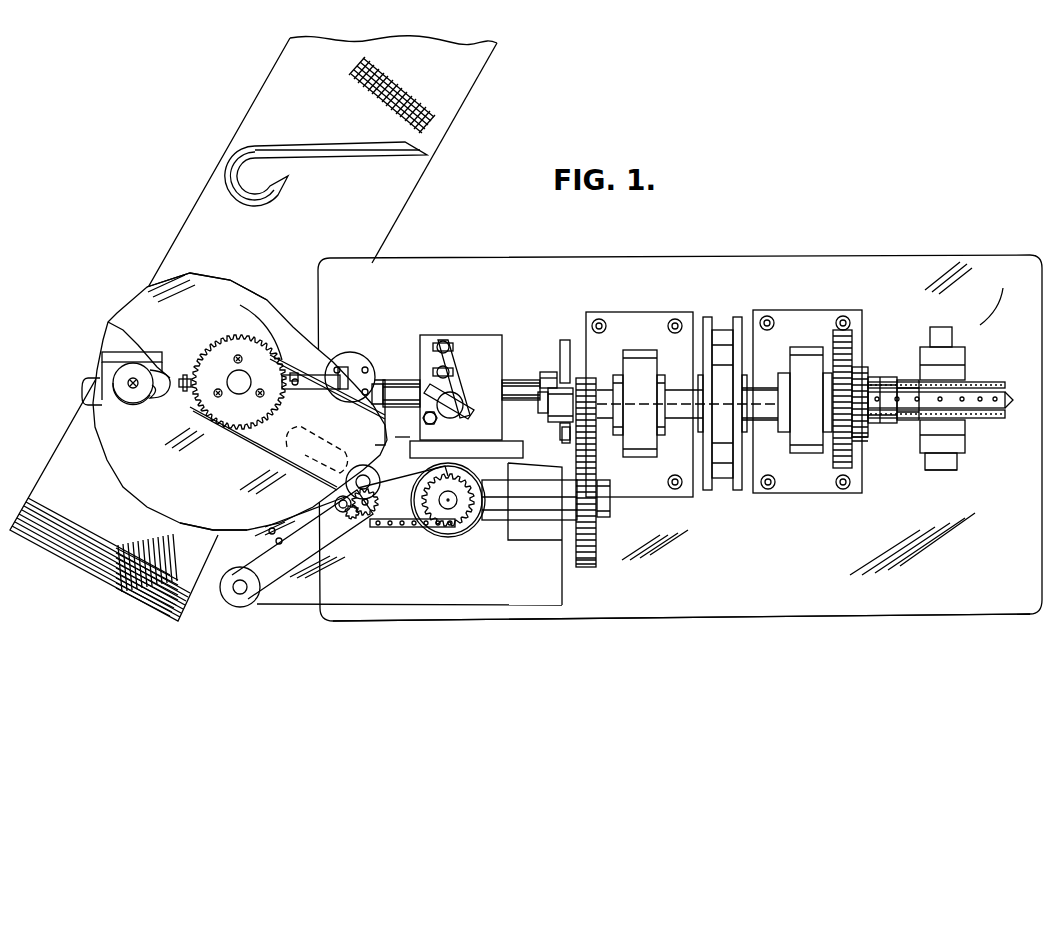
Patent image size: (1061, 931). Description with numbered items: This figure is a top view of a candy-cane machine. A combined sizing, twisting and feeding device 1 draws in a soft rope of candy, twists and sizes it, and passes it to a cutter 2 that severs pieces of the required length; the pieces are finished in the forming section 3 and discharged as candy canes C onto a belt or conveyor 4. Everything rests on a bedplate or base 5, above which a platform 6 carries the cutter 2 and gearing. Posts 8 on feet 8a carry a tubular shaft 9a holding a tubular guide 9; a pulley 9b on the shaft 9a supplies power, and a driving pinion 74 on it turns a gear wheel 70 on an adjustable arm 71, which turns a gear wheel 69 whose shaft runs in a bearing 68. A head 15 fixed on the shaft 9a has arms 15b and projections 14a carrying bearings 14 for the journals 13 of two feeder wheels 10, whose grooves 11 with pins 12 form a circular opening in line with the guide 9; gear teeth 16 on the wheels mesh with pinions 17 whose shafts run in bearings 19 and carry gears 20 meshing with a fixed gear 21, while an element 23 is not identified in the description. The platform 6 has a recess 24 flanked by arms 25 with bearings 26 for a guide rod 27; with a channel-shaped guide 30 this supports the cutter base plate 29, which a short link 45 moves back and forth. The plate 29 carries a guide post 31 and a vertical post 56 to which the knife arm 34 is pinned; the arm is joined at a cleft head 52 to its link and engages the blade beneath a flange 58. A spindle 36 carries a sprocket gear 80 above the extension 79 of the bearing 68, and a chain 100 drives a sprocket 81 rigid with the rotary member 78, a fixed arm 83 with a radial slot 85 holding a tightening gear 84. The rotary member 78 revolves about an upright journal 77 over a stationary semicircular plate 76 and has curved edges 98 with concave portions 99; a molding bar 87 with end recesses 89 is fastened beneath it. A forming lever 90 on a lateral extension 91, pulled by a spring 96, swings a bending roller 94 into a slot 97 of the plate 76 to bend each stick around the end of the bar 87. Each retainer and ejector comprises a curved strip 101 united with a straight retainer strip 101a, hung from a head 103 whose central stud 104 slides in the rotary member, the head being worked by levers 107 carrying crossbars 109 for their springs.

The combined sizing, twisting and feeding device 1 is at (995, 296).
The cutter 2 is at (460, 370).
The forming section 3 is at (139, 328).
The belt or conveyor 4 is at (243, 125).
The bedplate or base 5 is at (803, 606).
The platform 6 is at (450, 612).
The bearing supports or posts 8 is at (810, 452).
The feet 8a is at (627, 340).
The tubular guide 9 is at (575, 448).
The tubular shaft 9a is at (542, 390).
The pulley 9b is at (722, 320).
The rotatable feeder elements 10 is at (1005, 414).
The grooves 11 is at (1005, 398).
The pins or studs 12 is at (975, 410).
The journal 13 is at (947, 471).
The bearings 14 is at (960, 442).
The projections 14a is at (932, 347).
The head 15 is at (833, 403).
The arms 15b is at (886, 445).
The gear teeth 16 is at (985, 384).
The pinions 17 is at (880, 377).
The bearings 19 is at (905, 432).
The gears 20 is at (838, 345).
The fixed gear 21 is at (853, 455).
The pinion gear 23 is at (858, 364).
The recess 24 is at (515, 445).
The arms 25 is at (610, 476).
The bearings 26 is at (550, 372).
The horizontal guide rod 27 is at (510, 380).
The base plate of the cutter 29 is at (476, 355).
The channel-shaped guide 30 is at (500, 490).
The guide post 31 is at (463, 405).
The lever 34 is at (441, 370).
The rotatable shaft or spindle 36 is at (413, 516).
The short link 45 is at (385, 380).
The cleft head 52 is at (395, 383).
The vertical post 56 is at (443, 343).
The enlarged head or flange 58 is at (400, 405).
The bearing 68 is at (530, 540).
The gear wheel 69 is at (590, 568).
The gear wheel 70 is at (585, 432).
The arm 71 is at (565, 340).
The driving pinion 74 is at (580, 378).
The stationary member 76 is at (240, 404).
The upright journal 77 is at (238, 380).
The rotary member 78 is at (243, 306).
The upper horizontal extension 79 is at (470, 520).
The sprocket gear 80 is at (452, 505).
The sprocket 81 is at (239, 396).
The arm 83 is at (398, 512).
The tightening gear 84 is at (355, 520).
The radial slot 85 is at (343, 512).
The molding element or bar 87 is at (95, 405).
The shallow rounded recess 89 is at (140, 392).
The forming lever 90 is at (256, 545).
The lateral extension 91 is at (305, 602).
The bending roller 94 is at (372, 481).
The spring 96 is at (262, 525).
The slot 97 is at (326, 432).
The curved edges 98 is at (203, 276).
The concave or reentrant portions 99 is at (178, 400).
The driving chain 100 is at (410, 528).
The flat curved strip 101 is at (102, 385).
The straight retainer strip 101a is at (117, 352).
The disc or head 103 is at (350, 375).
The central stud 104 is at (131, 386).
The levers 107 is at (308, 392).
The crossbars 109 is at (274, 350).
The candy canes C is at (226, 182).